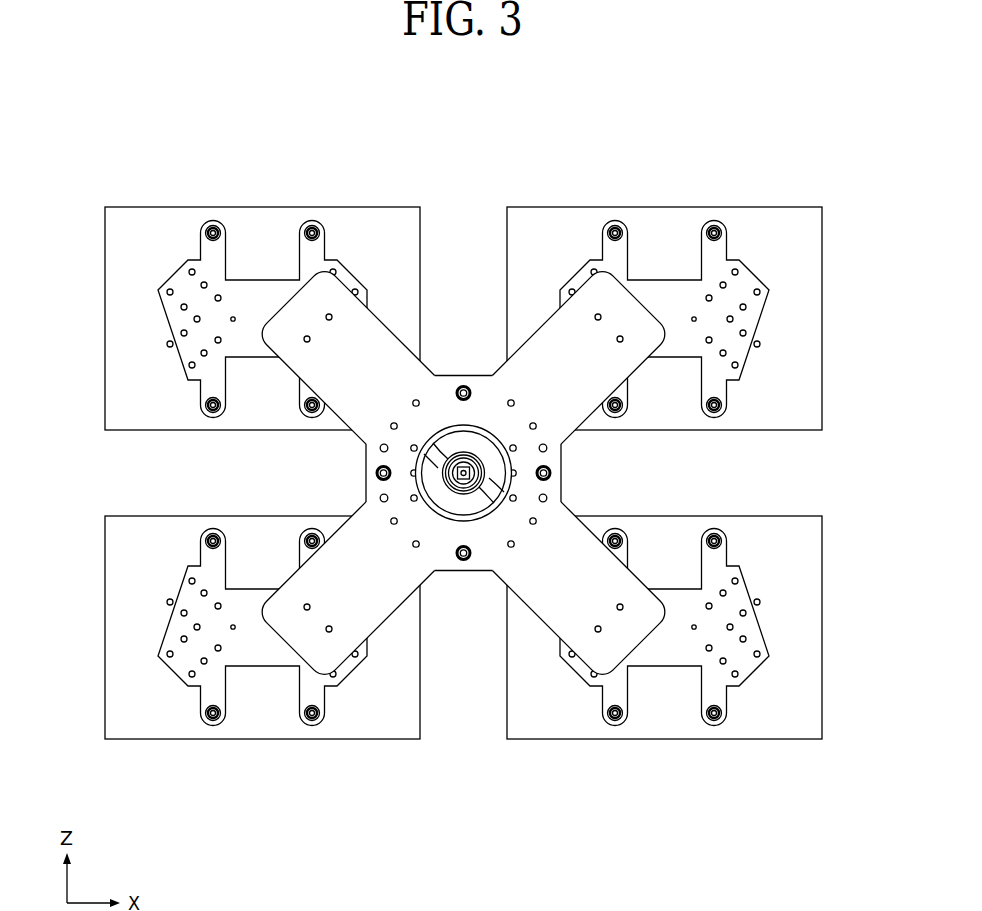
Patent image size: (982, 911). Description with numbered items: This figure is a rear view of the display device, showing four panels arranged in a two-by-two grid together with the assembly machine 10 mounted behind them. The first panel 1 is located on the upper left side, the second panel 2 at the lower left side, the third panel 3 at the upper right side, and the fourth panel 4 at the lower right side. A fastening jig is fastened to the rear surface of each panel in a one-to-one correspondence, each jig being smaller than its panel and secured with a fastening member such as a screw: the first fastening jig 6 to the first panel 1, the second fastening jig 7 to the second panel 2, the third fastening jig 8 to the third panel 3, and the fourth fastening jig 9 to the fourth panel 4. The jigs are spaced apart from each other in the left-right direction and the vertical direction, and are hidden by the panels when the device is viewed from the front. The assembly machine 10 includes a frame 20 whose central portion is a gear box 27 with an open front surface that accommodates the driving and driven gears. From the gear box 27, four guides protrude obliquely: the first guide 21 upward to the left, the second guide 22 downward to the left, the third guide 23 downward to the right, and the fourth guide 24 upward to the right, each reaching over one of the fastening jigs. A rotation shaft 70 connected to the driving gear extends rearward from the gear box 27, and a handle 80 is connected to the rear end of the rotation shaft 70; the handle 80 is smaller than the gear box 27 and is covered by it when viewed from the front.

The first panel 1 is at (122, 223).
The second panel 2 is at (122, 723).
The third panel 3 is at (805, 223).
The fourth panel 4 is at (805, 723).
The first fastening jig 6 is at (257, 292).
The second fastening jig 7 is at (257, 653).
The third fastening jig 8 is at (670, 292).
The fourth fastening jig 9 is at (670, 653).
The assembly machine 10 is at (462, 456).
The frame 20 is at (462, 456).
The first guide 21 is at (377, 335).
The second guide 22 is at (378, 610).
The third guide 23 is at (550, 335).
The fourth guide 24 is at (549, 610).
The gear box 27 is at (463, 373).
The rotation shaft 70 is at (458, 473).
The handle 80 is at (507, 461).